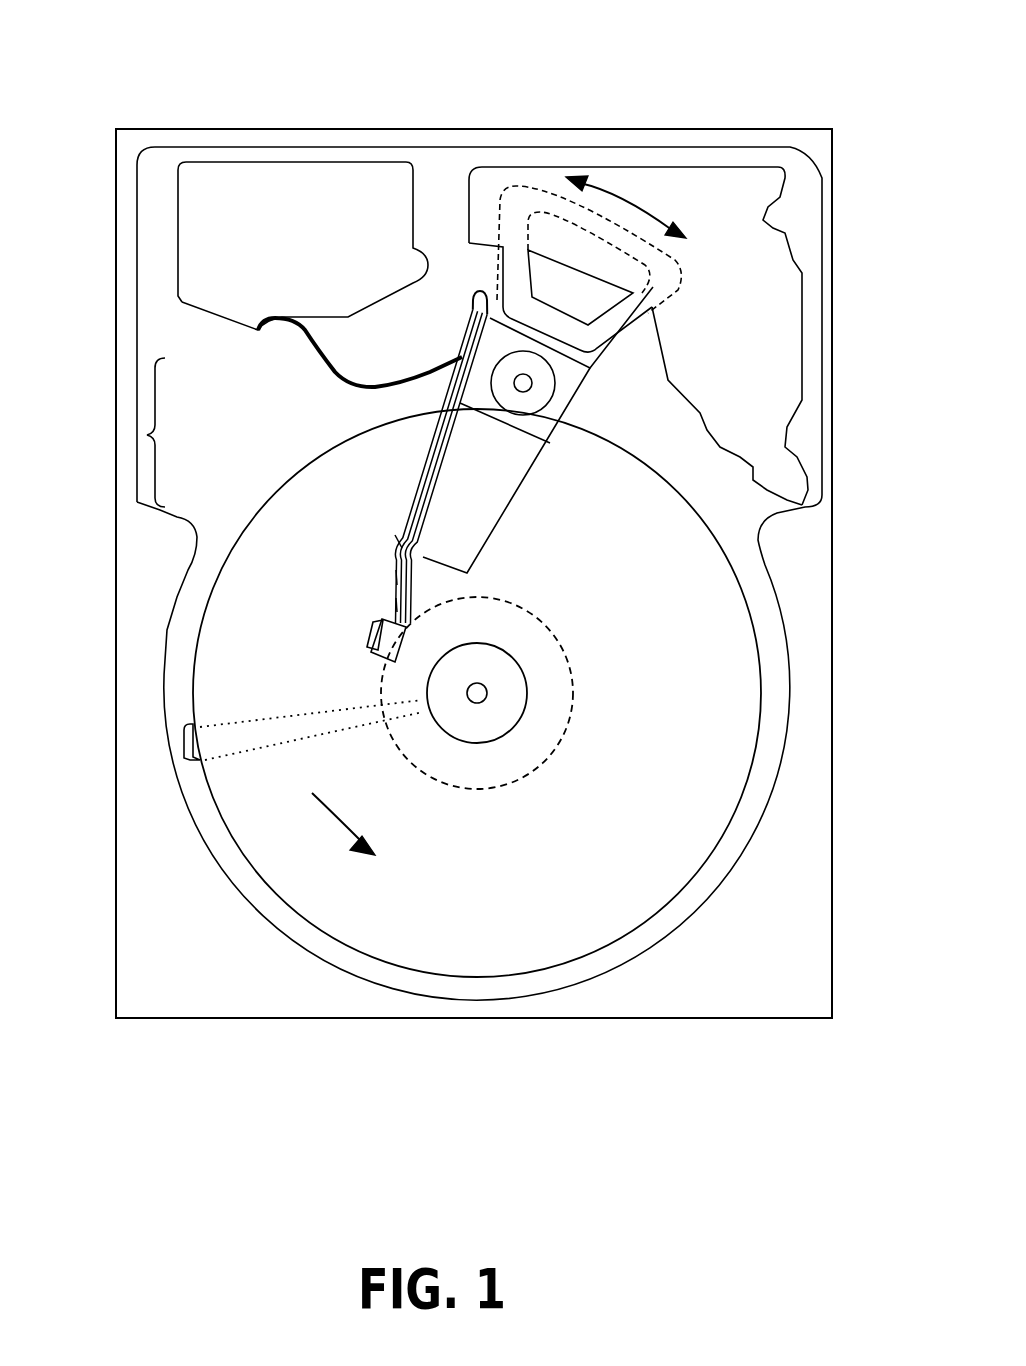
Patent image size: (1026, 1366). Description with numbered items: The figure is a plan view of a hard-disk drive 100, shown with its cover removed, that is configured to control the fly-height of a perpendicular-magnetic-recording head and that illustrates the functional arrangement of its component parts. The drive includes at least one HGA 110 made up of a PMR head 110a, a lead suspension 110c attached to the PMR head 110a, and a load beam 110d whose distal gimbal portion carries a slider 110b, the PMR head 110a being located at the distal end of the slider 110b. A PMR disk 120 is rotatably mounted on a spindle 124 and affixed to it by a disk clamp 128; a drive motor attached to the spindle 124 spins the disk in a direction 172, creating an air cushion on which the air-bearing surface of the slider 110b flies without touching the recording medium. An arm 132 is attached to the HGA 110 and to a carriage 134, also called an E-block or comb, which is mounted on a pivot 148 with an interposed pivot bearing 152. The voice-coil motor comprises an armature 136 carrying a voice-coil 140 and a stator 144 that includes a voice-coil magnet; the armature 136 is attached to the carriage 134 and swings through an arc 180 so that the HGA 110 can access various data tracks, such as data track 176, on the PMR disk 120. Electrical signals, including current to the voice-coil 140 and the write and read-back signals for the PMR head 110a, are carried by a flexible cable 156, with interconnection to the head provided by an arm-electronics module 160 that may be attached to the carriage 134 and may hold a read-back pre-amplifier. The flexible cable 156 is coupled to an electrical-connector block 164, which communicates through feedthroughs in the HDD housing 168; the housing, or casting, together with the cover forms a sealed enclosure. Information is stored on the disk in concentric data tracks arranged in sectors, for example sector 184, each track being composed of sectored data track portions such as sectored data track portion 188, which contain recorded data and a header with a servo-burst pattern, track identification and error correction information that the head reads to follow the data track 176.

The hard-disk drive 100 is at (100, 78).
The head gimbal assembly 110 is at (146, 435).
The PMR head 110a is at (380, 622).
The slider 110b is at (396, 605).
The lead suspension 110c is at (398, 578).
The load beam 110d is at (403, 543).
The PMR disk 120 is at (680, 645).
The spindle 124 is at (488, 694).
The disk clamp 128 is at (502, 708).
The arm 132 is at (463, 510).
The carriage 134 is at (543, 417).
The armature 136 is at (497, 293).
The voice-coil 140 is at (518, 265).
The stator 144 is at (758, 275).
The pivot 148 is at (523, 383).
The pivot bearing 152 is at (537, 390).
The flexible cable 156 is at (318, 350).
The arm-electronics module 160 is at (473, 347).
The electrical-connector block 164 is at (210, 248).
The HDD housing 168 is at (817, 143).
The direction 172 is at (363, 833).
The data track 176 is at (563, 648).
The arc 180 is at (615, 190).
The sector 184 is at (168, 743).
The sectored data track portion 188 is at (382, 712).